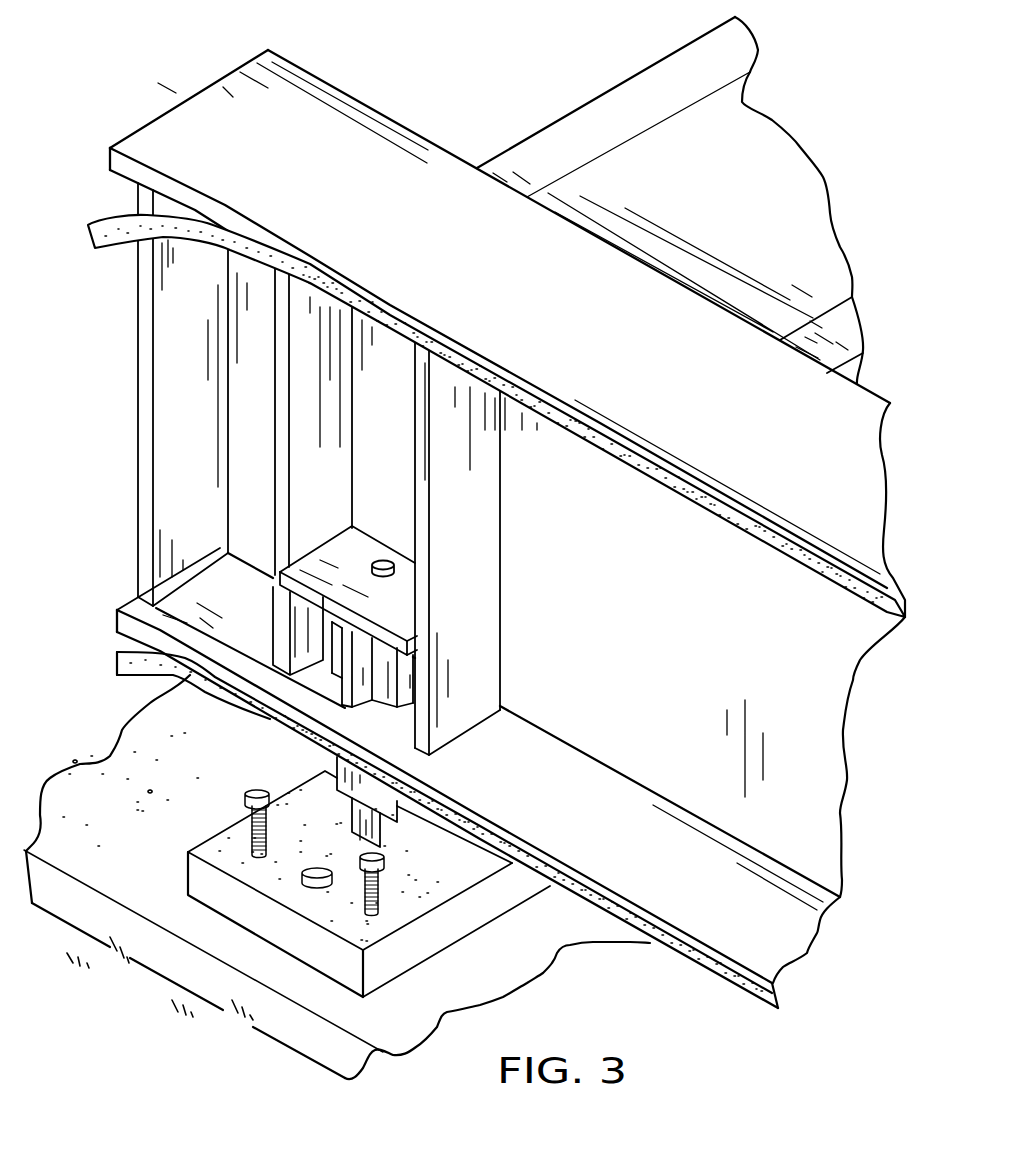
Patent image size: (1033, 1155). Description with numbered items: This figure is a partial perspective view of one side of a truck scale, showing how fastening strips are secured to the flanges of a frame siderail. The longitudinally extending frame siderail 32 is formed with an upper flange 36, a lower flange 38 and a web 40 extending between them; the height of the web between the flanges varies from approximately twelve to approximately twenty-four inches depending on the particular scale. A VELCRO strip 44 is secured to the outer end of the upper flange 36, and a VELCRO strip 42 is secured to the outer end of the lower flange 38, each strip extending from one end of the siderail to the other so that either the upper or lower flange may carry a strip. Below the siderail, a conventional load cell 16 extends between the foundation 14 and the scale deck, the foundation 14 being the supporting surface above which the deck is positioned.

The frame siderail 32 is at (433, 110).
The upper flange 36 is at (328, 187).
The VELCRO strip 44 is at (93, 158).
The web 40 is at (694, 624).
The lower flange 38 is at (595, 838).
The VELCRO strip 42 is at (98, 658).
The load cell 16 is at (341, 692).
The foundation 14 is at (172, 733).